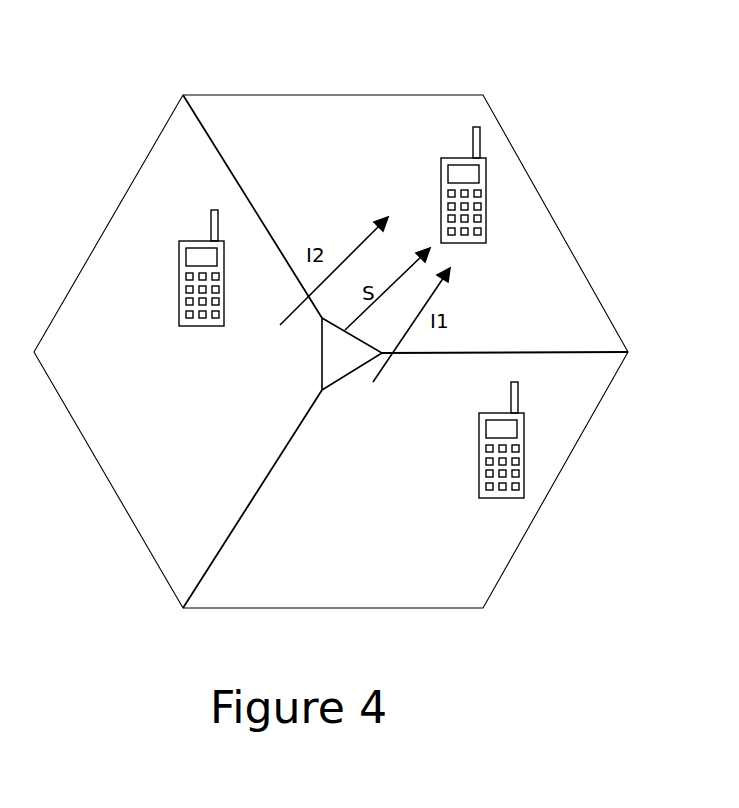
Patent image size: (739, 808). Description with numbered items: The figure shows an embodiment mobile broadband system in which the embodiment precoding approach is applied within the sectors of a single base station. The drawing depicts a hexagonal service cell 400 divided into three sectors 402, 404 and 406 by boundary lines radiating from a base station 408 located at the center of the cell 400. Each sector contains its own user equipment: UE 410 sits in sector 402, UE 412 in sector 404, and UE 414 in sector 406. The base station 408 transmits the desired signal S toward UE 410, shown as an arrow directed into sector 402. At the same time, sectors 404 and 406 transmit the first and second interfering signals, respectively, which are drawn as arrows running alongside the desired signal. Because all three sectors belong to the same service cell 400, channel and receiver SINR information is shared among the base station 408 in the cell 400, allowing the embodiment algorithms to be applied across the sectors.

The cell 400 is at (266, 94).
The sector 402 is at (260, 124).
The sector 404 is at (280, 584).
The sector 406 is at (102, 351).
The base station 408 is at (322, 362).
The UE 410 is at (441, 218).
The UE 412 is at (479, 475).
The UE 414 is at (179, 300).